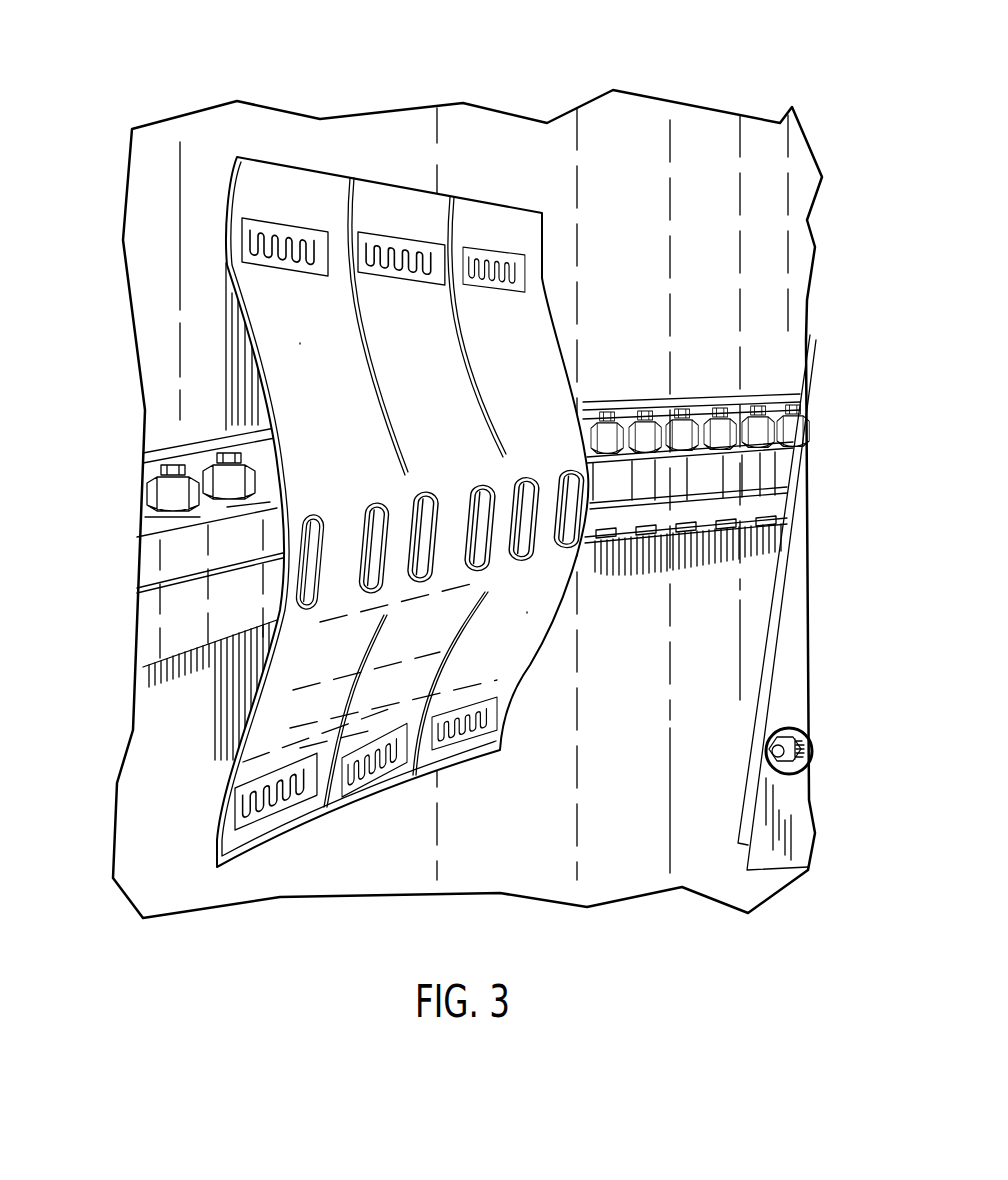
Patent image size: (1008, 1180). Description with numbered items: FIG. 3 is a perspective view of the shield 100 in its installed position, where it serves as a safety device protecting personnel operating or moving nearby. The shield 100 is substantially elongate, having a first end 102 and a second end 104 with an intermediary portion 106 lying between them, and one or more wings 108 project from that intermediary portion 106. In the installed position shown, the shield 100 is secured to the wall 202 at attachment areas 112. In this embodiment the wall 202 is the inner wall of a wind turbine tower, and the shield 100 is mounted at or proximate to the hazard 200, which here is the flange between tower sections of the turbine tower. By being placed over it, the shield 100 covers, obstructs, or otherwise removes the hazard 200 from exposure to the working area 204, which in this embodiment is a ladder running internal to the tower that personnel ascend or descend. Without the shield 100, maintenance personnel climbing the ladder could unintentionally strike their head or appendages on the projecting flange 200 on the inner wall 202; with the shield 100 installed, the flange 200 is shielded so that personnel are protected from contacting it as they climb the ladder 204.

The shield 100 is at (590, 365).
The first end 102 is at (390, 173).
The second end 104 is at (375, 815).
The intermediary portion 106 is at (592, 519).
The wing 108 is at (310, 340).
The attachment area 112 is at (276, 205).
The hazard 200 is at (275, 513).
The wall 202 is at (583, 233).
The working area 204 is at (736, 740).